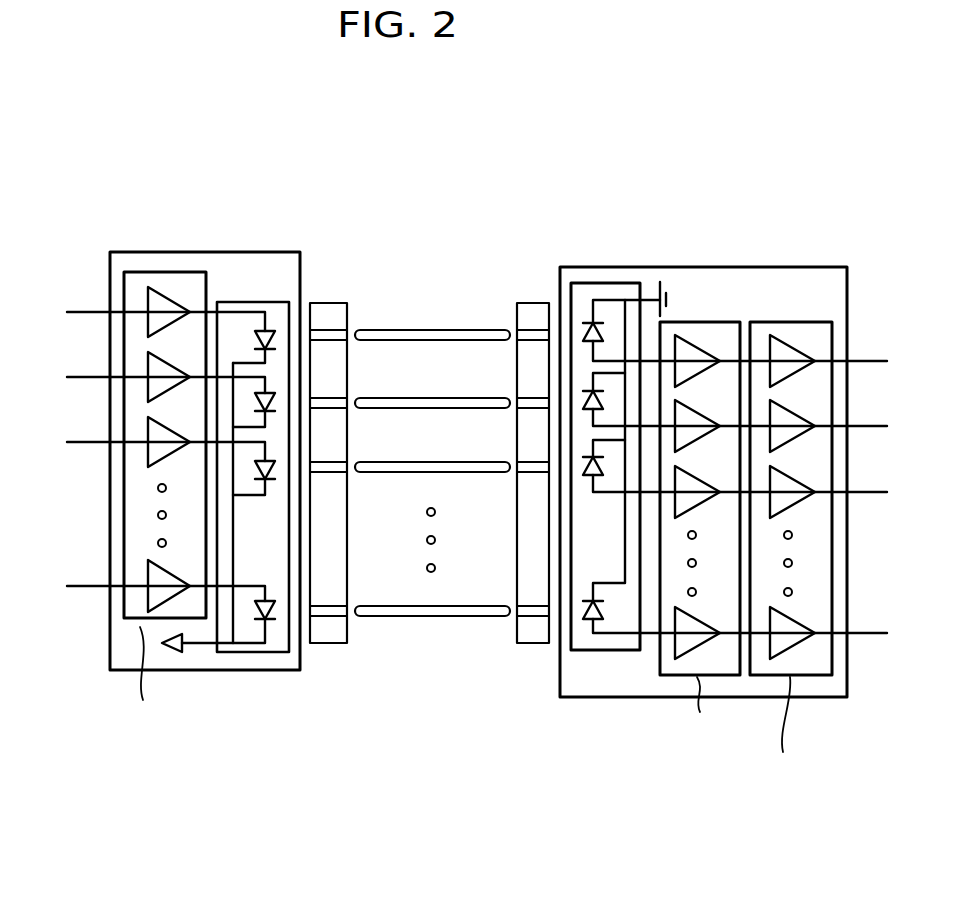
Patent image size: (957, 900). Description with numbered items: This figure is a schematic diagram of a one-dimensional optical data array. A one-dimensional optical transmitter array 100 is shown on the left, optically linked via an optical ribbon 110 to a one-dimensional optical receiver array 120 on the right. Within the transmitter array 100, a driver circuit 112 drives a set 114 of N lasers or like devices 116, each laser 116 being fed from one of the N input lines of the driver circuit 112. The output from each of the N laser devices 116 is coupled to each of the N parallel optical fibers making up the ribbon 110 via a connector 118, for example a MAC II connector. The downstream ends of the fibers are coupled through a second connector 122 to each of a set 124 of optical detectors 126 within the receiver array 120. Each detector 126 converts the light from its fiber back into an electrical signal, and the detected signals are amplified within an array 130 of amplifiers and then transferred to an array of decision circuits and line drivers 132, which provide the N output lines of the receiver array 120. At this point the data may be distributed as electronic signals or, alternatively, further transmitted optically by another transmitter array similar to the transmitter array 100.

The one-dimensional optical transmitter array 100 is at (298, 256).
The optical ribbon 110 is at (432, 328).
The driver circuit 112 is at (125, 619).
The set of N lasers 114 is at (282, 640).
The laser 116 is at (277, 341).
The connector 118 is at (347, 643).
The one-dimensional optical receiver array 120 is at (797, 282).
The second connector 122 is at (517, 644).
The set of optical detectors 124 is at (590, 290).
The optical detector 126 is at (588, 340).
The array of amplifiers 130 is at (667, 545).
The array of decision circuits and line drivers 132 is at (772, 569).